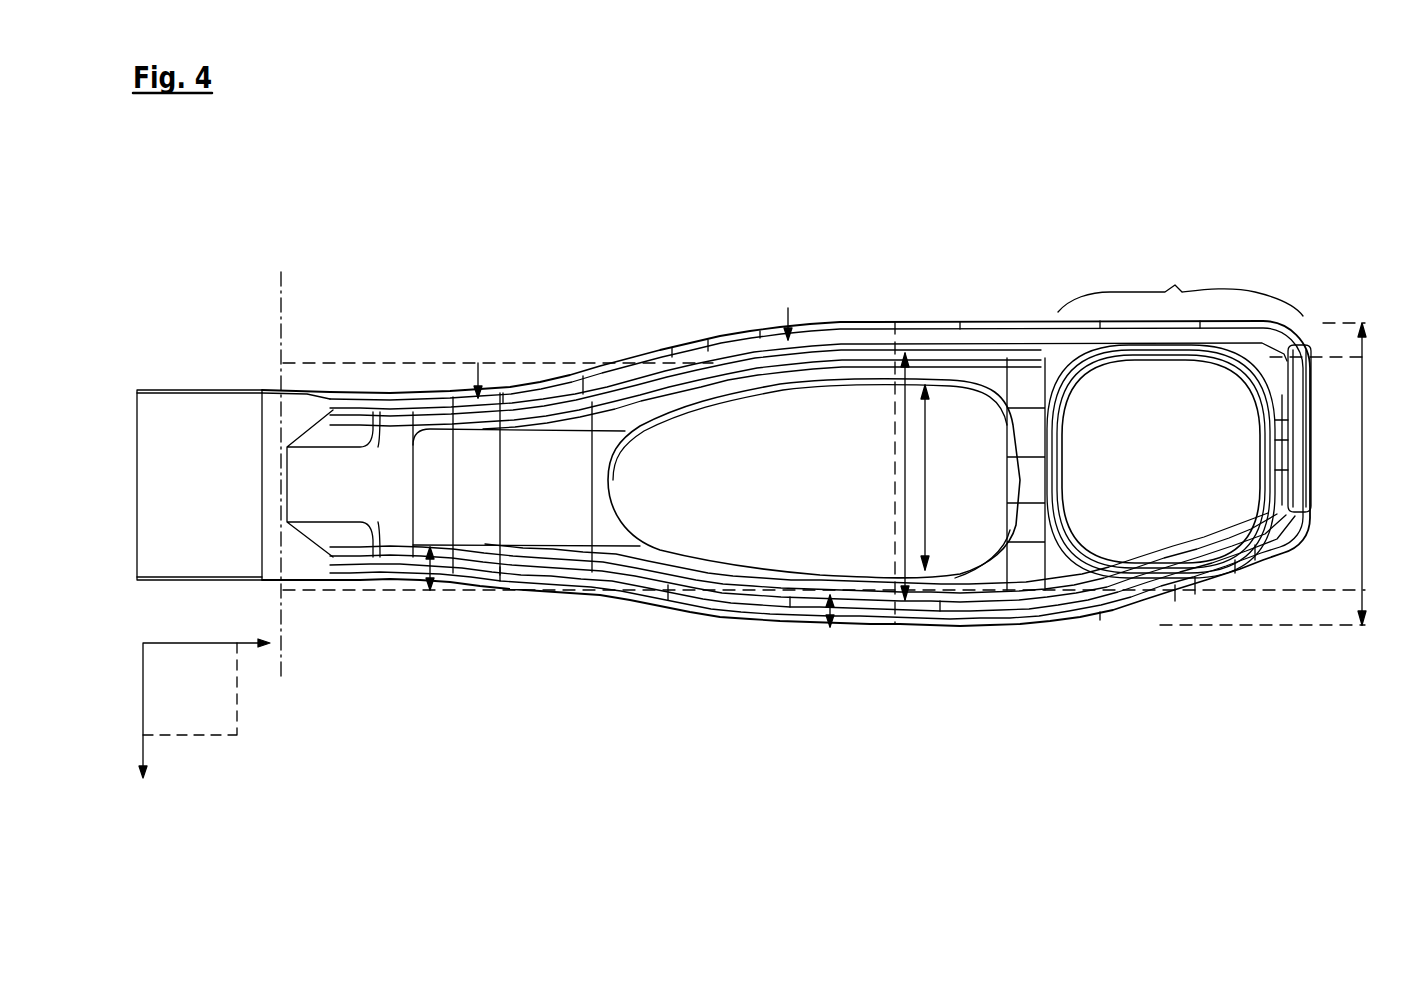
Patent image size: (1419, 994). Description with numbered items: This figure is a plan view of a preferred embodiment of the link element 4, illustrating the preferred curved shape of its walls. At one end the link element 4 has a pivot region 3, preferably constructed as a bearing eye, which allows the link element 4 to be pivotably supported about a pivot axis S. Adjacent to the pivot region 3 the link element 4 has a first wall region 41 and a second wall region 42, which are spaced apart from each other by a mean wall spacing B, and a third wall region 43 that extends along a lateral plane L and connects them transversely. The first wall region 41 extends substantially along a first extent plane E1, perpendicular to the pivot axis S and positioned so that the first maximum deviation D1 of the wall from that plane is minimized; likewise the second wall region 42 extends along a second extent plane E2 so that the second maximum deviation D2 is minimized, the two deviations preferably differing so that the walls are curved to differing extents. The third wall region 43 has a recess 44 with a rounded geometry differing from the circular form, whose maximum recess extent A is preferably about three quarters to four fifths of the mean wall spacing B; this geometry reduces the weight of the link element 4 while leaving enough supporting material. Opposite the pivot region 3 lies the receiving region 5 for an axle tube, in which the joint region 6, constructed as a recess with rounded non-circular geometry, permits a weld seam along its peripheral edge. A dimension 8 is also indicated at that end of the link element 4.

The pivot region 3 is at (208, 410).
The link element 4 is at (803, 446).
The first wall region 41 is at (1023, 338).
The second wall region 42 is at (1077, 610).
The third wall region 43 is at (572, 500).
The recess 44 is at (826, 420).
The receiving region 5 is at (1178, 288).
The joint region 6 is at (1230, 587).
The width dimension 8 is at (1364, 460).
The maximum recess extent A is at (932, 495).
The mean wall spacing B is at (930, 388).
The first maximum deviation D1 is at (788, 308).
The second maximum deviation D2 is at (432, 592).
The first extent plane E1 is at (415, 358).
The second extent plane E2 is at (360, 594).
The pivot axis S is at (313, 320).
The lateral plane L is at (205, 735).